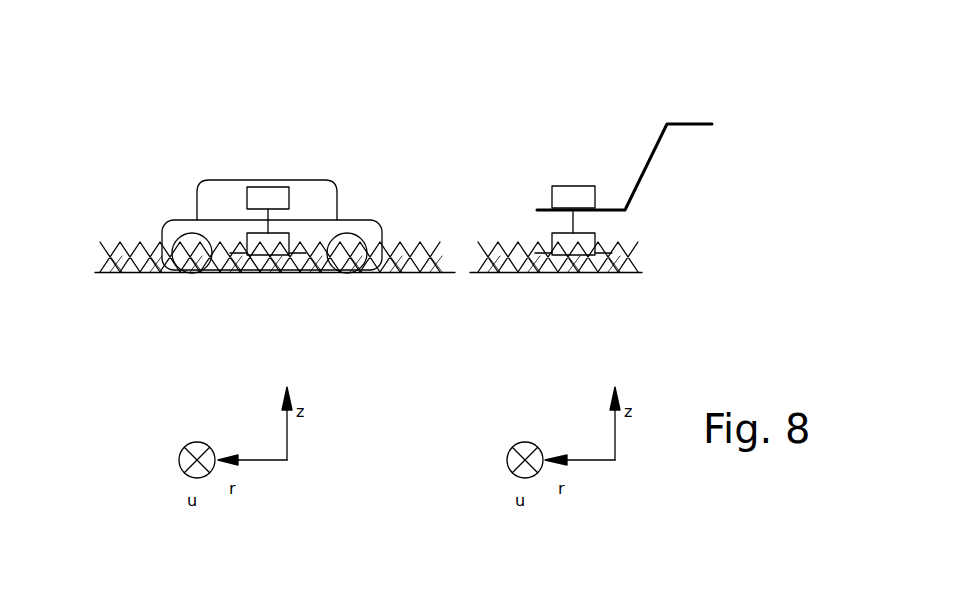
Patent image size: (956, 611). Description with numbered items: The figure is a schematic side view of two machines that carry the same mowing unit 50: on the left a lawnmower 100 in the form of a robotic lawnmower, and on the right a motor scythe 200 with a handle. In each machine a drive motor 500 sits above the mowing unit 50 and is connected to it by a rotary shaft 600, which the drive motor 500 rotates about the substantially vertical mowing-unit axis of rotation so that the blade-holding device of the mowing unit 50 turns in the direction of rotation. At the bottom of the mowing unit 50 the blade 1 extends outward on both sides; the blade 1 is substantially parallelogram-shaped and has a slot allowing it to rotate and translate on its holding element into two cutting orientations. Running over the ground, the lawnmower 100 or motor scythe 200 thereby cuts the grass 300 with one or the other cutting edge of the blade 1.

The lawnmower 100 is at (166, 173).
The motor scythe 200 is at (727, 143).
The grass 300 is at (122, 253).
The drive motor 500 is at (262, 197).
The rotary shaft 600 is at (268, 228).
The mowing unit 50 is at (265, 255).
The blade 1 is at (235, 254).